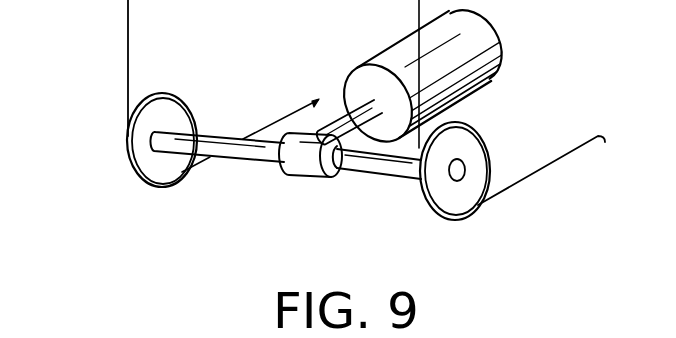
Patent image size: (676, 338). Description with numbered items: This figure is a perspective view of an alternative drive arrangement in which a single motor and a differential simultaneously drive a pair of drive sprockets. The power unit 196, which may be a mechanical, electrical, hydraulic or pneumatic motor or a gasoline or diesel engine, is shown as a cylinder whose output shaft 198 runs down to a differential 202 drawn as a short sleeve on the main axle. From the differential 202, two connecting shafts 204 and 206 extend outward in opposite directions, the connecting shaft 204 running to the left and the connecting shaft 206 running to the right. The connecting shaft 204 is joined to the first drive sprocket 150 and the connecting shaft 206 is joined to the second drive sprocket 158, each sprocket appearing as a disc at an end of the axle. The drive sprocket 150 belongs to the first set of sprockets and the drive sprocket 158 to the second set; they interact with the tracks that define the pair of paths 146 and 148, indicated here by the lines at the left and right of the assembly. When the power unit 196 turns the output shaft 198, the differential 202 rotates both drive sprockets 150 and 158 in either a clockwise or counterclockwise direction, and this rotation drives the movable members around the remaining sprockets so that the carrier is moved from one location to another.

The path 146 is at (127, 70).
The path 148 is at (510, 193).
The drive sprocket 150 is at (176, 104).
The drive sprocket 158 is at (479, 147).
The power unit 196 is at (479, 49).
The output shaft 198 is at (347, 104).
The differential 202 is at (305, 175).
The connecting shaft 204 is at (250, 162).
The connecting shaft 206 is at (373, 178).